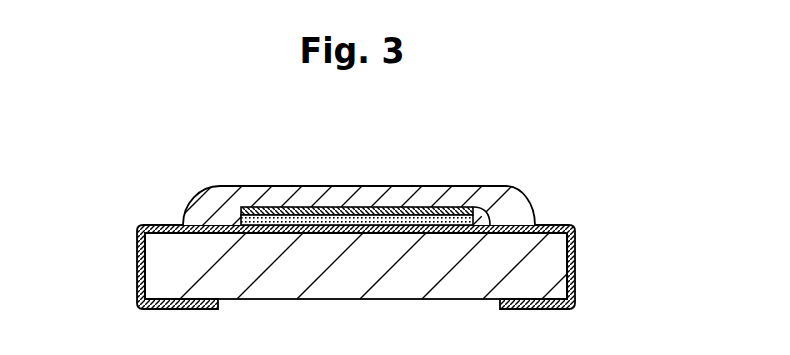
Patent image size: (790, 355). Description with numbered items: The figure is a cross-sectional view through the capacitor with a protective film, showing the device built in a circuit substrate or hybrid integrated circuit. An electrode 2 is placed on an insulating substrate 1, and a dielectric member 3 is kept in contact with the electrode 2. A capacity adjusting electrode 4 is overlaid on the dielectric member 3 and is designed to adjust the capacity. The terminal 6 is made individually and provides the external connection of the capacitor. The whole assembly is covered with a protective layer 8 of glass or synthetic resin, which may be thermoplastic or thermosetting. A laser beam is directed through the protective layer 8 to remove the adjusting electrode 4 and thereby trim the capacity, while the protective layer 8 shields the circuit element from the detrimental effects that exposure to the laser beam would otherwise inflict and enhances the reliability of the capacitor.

The insulating substrate 1 is at (160, 262).
The electrode 2 is at (267, 215).
The dielectric member 3 is at (348, 210).
The capacity adjusting electrode 4 is at (445, 193).
The terminal 6 is at (168, 225).
The protective layer 8 is at (510, 212).